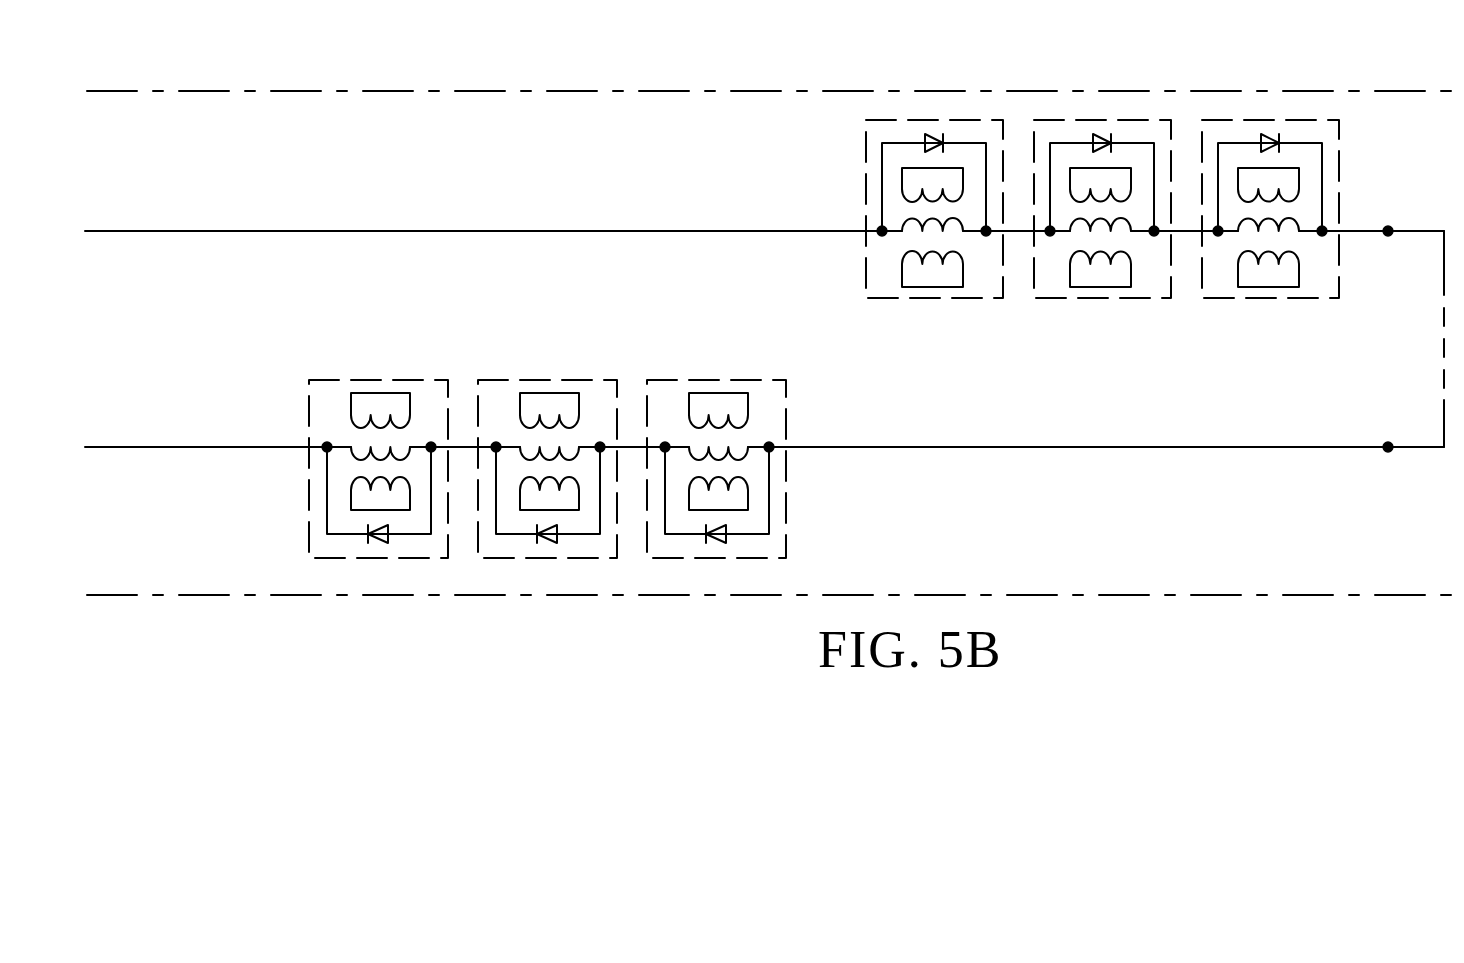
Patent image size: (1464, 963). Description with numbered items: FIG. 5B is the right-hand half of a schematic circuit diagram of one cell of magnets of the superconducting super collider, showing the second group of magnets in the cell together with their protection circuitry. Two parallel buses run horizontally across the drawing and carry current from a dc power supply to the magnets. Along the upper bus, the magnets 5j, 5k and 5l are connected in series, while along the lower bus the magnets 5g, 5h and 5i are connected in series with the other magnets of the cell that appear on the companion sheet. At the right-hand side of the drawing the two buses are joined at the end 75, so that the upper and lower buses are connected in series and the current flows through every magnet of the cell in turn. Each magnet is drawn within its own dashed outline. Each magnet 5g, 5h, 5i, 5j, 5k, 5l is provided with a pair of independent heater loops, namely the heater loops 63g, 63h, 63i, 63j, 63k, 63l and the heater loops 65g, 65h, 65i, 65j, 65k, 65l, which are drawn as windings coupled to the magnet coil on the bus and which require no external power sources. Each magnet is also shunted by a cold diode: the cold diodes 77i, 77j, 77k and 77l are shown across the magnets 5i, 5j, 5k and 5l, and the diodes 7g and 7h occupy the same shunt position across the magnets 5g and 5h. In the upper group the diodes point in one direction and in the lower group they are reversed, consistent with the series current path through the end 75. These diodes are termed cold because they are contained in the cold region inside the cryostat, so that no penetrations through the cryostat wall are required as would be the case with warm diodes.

The magnet 5g is at (440, 380).
The magnet 5h is at (547, 454).
The magnet 5i is at (716, 454).
The magnet 5j is at (997, 300).
The magnet 5k is at (1102, 228).
The magnet 5l is at (1270, 228).
The heater loop 63g is at (350, 497).
The heater loop 63h is at (529, 552).
The heater loop 63i is at (700, 552).
The heater loop 63j is at (963, 182).
The heater loop 63k is at (1122, 130).
The heater loop 63l is at (1288, 131).
The heater loop 65g is at (376, 393).
The heater loop 65h is at (537, 389).
The heater loop 65i is at (706, 389).
The heater loop 65j is at (927, 288).
The heater loop 65k is at (1087, 294).
The heater loop 65l is at (1262, 294).
The diode g 7g is at (383, 543).
The diode h 7h is at (571, 576).
The cold diode 77i is at (742, 576).
The cold diode 77j is at (931, 130).
The cold diode 77k is at (1083, 101).
The cold diode 77l is at (1258, 101).
The end 75 is at (1444, 347).